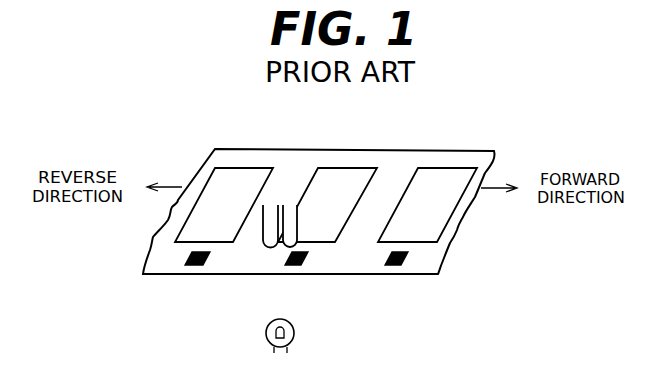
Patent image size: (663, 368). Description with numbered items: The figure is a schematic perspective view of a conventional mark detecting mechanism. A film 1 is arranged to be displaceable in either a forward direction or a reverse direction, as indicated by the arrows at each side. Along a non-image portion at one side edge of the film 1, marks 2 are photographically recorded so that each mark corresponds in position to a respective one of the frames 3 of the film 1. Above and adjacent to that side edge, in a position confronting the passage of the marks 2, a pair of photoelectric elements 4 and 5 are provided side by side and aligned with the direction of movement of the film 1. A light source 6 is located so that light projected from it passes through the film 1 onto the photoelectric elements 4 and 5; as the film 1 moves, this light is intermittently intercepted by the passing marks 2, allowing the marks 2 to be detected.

The film 1 is at (303, 160).
The marks 2 is at (194, 265).
The frames 3 is at (229, 228).
The photoelectric element 4 is at (262, 205).
The photoelectric element 5 is at (292, 205).
The light source 6 is at (294, 330).